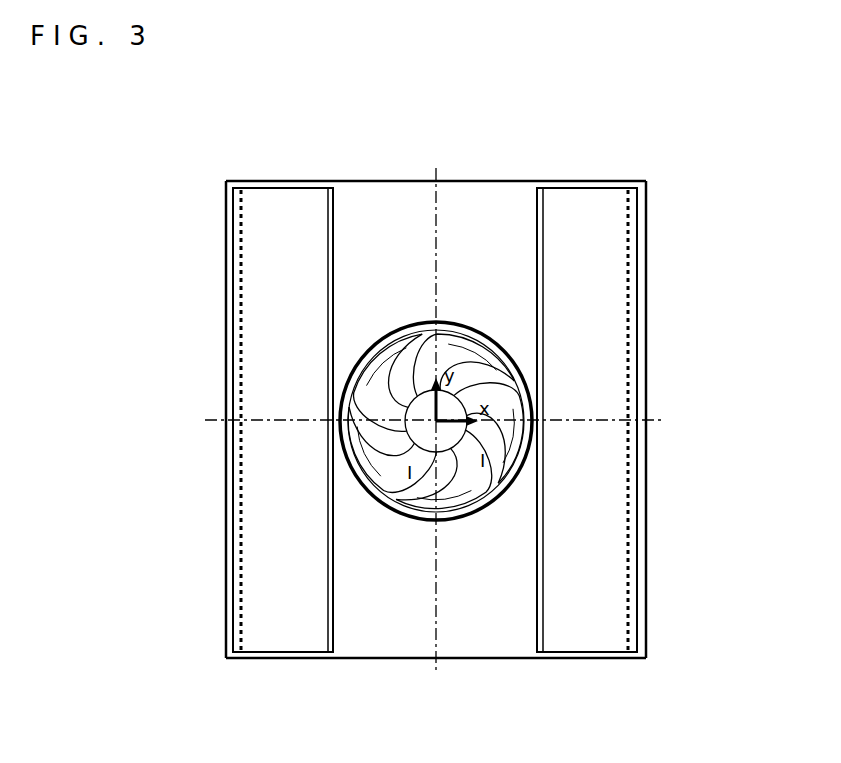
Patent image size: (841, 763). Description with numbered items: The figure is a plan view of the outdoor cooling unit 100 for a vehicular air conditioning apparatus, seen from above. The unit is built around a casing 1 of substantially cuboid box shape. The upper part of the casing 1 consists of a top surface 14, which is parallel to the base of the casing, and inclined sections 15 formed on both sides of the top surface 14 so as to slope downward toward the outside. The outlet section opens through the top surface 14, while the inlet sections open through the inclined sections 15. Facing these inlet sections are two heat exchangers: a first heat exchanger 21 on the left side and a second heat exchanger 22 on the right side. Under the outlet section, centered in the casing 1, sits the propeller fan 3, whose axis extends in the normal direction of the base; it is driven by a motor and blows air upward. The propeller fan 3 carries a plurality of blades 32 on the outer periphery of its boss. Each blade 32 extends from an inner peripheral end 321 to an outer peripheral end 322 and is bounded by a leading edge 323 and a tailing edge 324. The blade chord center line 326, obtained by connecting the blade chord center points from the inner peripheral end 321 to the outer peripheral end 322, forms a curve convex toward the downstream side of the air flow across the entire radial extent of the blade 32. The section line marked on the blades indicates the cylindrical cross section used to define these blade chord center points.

The outdoor cooling unit 100 is at (462, 740).
The casing 1 is at (537, 674).
The top surface 14 is at (400, 198).
The inclined sections 15 is at (292, 181).
The first heat exchanger 21 is at (255, 577).
The second heat exchanger 22 is at (612, 578).
The propeller fan 3 is at (403, 452).
The blades 32 is at (365, 373).
The inner peripheral end 321 is at (420, 432).
The outer peripheral end 322 is at (383, 345).
The leading edge 323 is at (434, 322).
The tailing edge 324 is at (370, 407).
The blade chord center line 326 is at (388, 397).